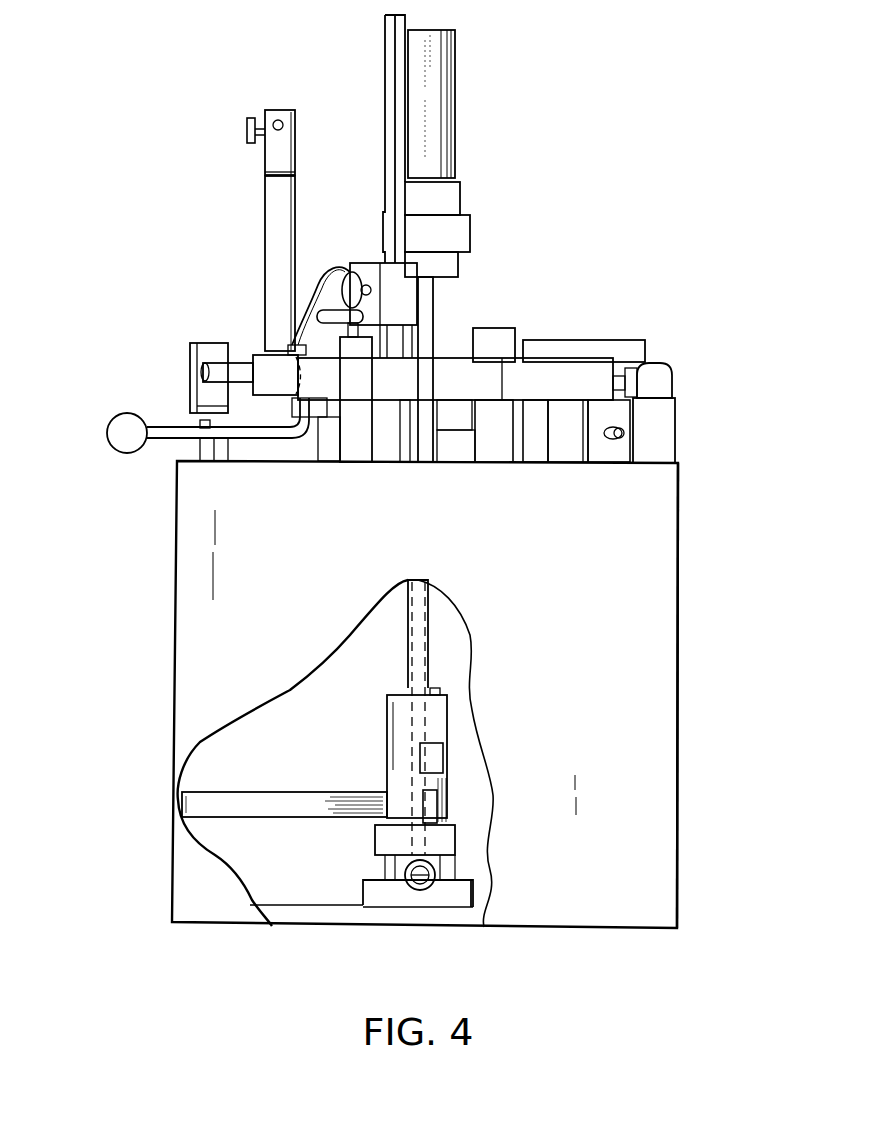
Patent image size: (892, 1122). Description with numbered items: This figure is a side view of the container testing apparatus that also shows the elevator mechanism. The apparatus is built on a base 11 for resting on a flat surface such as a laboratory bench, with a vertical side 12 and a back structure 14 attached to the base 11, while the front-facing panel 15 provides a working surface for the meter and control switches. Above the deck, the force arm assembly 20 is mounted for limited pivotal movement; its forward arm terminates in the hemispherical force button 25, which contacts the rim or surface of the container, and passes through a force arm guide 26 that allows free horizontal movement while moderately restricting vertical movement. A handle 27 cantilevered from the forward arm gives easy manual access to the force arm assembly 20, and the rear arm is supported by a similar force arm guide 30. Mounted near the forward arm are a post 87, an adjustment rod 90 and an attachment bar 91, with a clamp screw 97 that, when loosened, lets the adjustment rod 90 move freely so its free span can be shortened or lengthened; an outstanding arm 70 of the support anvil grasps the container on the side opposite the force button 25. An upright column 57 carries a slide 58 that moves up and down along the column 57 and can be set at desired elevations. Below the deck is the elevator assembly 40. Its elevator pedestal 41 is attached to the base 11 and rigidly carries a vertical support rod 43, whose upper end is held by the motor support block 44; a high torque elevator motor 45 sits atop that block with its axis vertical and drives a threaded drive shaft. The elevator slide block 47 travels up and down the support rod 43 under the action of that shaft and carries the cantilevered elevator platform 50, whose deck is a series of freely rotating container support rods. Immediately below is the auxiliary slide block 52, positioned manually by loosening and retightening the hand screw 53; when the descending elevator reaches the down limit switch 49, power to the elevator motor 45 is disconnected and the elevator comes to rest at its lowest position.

The base 11 is at (317, 905).
The side 12 is at (603, 697).
The back structure 14 is at (678, 632).
The panel 15 is at (177, 634).
The force arm assembly 20 is at (540, 372).
The force button 25 is at (258, 352).
The force arm guide 26 is at (370, 386).
The handle 27 is at (110, 420).
The force arm guide 30 is at (618, 342).
The elevator assembly 40 is at (430, 628).
The elevator pedestal 41 is at (465, 878).
The support rod 43 is at (435, 310).
The motor support block 44 is at (462, 202).
The elevator motor 45 is at (453, 98).
The elevator slide block 47 is at (387, 758).
The down limit switch 49 is at (433, 806).
The elevator platform 50 is at (263, 819).
The auxiliary slide block 52 is at (375, 838).
The hand screw 53 is at (445, 866).
The upright column 57 is at (384, 58).
The slide 58 is at (360, 262).
The outstanding arm 70 is at (208, 372).
The post 87 is at (262, 268).
The adjustment rod 90 is at (277, 118).
The attachment bar 91 is at (297, 145).
The clamp screw 97 is at (243, 130).